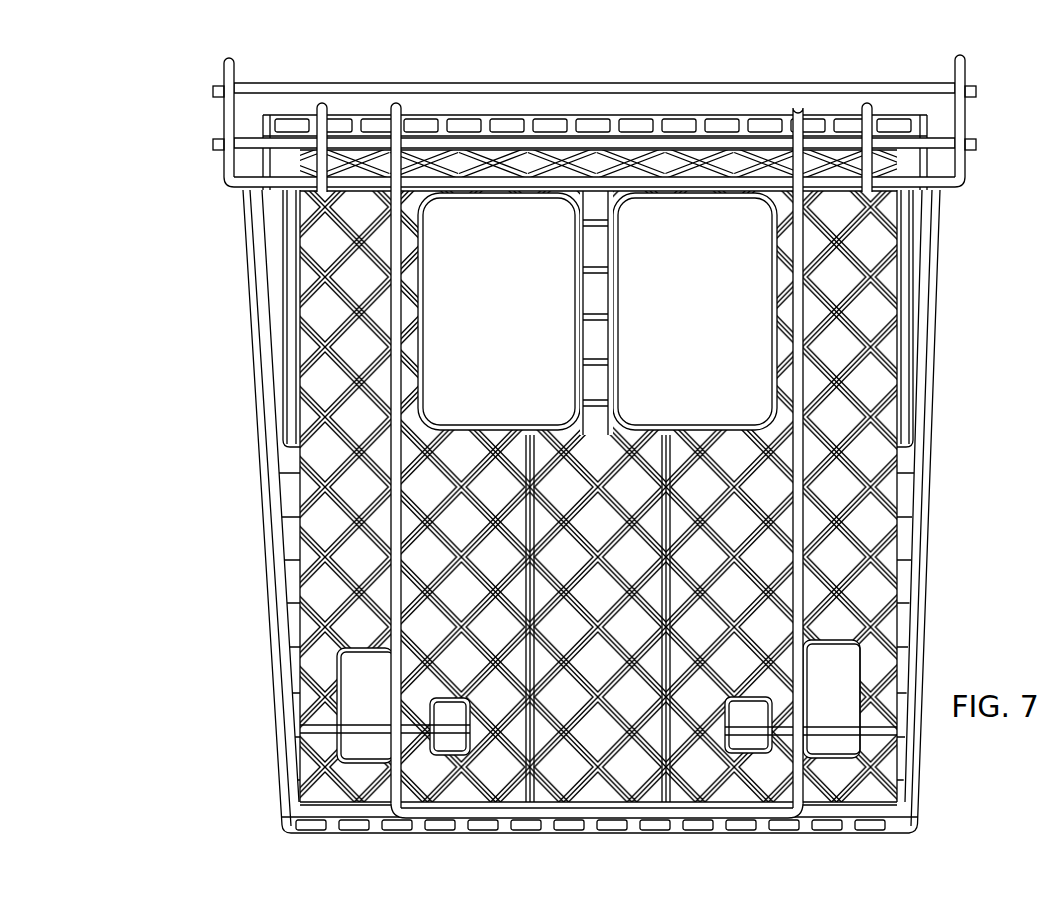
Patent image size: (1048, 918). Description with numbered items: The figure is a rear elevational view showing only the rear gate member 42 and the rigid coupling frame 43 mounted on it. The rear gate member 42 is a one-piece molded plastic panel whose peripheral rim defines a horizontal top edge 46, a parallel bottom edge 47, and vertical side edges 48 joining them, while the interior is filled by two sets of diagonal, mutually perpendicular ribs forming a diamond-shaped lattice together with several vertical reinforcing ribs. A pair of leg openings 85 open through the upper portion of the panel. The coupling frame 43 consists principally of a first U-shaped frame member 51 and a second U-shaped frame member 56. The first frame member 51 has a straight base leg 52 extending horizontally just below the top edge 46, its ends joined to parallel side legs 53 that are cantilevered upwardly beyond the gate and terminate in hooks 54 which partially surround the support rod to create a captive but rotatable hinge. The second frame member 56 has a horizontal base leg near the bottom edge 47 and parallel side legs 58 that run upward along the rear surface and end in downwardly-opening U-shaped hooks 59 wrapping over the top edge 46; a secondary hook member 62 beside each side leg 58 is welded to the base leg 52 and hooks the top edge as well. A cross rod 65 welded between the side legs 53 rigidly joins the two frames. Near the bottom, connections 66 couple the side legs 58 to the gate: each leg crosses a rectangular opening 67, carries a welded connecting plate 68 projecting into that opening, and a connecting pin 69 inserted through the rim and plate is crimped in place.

The rear gate member 42 is at (257, 480).
The rigid coupling frame 43 is at (213, 131).
The top edge 46 is at (515, 114).
The bottom edge 47 is at (560, 836).
The side edges 48 is at (250, 370).
The first U-shaped frame member 51 is at (969, 158).
The base leg 52 is at (672, 187).
The side legs 53 is at (222, 120).
The hooks 54 is at (222, 77).
The second U-shaped frame member 56 is at (791, 335).
The side legs 58 is at (424, 418).
The U-shaped hooks 59 is at (398, 118).
The secondary hook member 62 is at (324, 117).
The cross rods 65 is at (690, 83).
The connections 66 is at (378, 703).
The openings 67 is at (345, 746).
The connecting plate 68 is at (330, 801).
The connecting pin 69 is at (367, 724).
The leg openings 85 is at (578, 316).